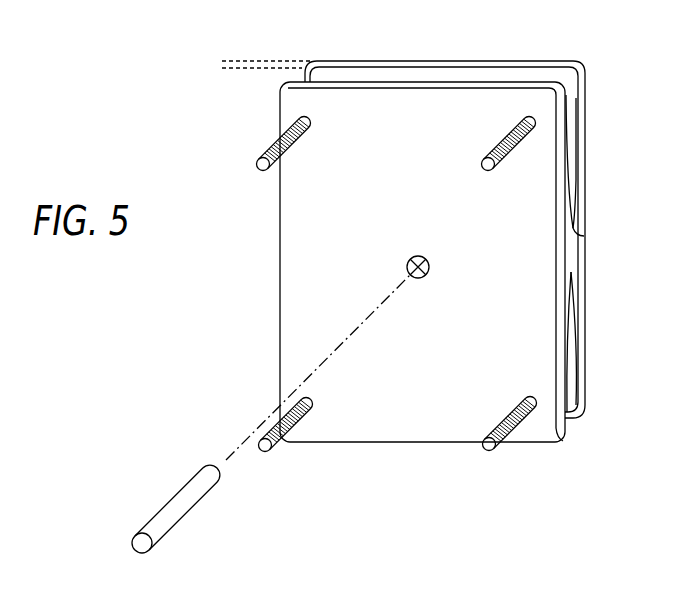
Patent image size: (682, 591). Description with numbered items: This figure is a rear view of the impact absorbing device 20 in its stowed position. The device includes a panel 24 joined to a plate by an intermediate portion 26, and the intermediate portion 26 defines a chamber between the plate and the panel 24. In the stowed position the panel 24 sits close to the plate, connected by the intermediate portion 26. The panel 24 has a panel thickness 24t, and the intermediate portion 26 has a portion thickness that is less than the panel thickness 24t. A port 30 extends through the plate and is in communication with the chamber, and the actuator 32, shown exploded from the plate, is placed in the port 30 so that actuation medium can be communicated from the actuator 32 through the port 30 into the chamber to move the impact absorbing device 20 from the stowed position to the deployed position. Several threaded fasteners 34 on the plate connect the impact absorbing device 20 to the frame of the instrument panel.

The impact absorbing device 20 is at (157, 67).
The panel 24 is at (566, 60).
The panel thickness 24t is at (205, 97).
The intermediate portion 26 is at (584, 236).
The port 30 is at (408, 262).
The actuator 32 is at (158, 518).
The fastener 34 is at (261, 170).